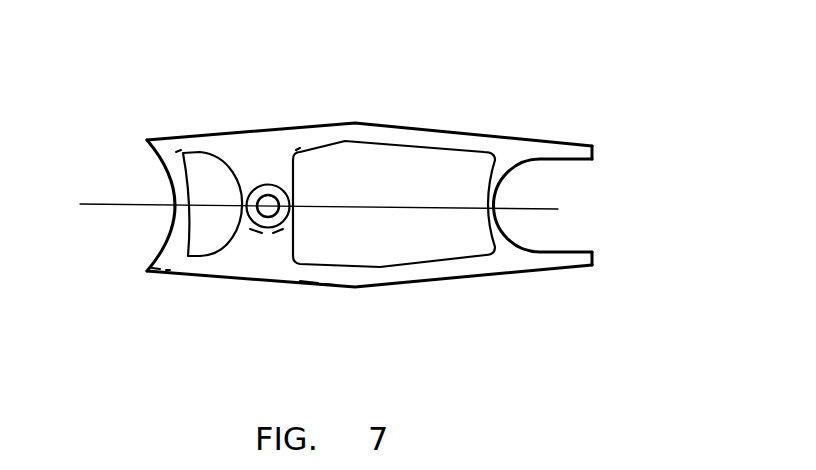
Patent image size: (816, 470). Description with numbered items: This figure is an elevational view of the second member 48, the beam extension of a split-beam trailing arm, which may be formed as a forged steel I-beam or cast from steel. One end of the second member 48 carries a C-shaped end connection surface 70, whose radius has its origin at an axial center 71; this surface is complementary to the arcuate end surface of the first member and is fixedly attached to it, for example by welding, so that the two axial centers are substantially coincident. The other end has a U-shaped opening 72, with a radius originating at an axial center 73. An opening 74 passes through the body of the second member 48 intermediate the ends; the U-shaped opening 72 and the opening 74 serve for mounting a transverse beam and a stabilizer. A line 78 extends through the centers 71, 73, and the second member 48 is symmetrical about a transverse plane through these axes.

The second member 48 is at (422, 128).
The C-shaped end connection surface 70 is at (175, 212).
The axial center 71 is at (96, 205).
The U-shaped opening 72 is at (503, 205).
The axial center 73 is at (540, 208).
The opening 74 is at (266, 218).
The line 78 is at (128, 203).